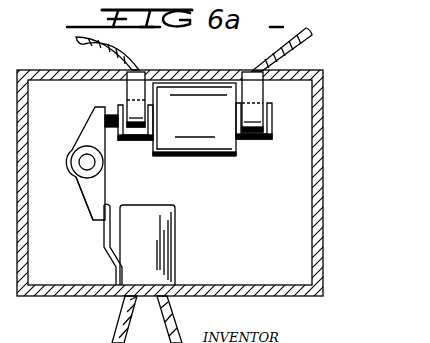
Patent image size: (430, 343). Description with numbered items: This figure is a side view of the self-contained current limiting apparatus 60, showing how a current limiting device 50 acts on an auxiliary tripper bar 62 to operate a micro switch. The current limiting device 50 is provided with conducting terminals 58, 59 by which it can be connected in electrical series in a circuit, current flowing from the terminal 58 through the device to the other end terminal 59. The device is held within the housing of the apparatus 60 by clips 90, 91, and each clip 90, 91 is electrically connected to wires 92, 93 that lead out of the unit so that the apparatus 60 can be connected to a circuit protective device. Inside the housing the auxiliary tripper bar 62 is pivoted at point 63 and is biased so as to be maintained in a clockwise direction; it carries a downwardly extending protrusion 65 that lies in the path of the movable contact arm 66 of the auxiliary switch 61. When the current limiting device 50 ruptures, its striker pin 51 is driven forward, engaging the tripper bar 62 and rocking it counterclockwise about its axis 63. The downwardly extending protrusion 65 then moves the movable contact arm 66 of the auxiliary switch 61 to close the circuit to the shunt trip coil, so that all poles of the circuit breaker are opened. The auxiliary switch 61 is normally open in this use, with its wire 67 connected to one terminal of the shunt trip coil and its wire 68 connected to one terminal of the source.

The current limiting device 50 is at (192, 82).
The striker pin 51 is at (108, 114).
The conducting terminal 58 is at (243, 140).
The conducting terminal 59 is at (125, 140).
The current limiting apparatus 60 is at (52, 300).
The auxiliary switch 61 is at (183, 255).
The auxiliary tripper bar 62 is at (67, 186).
The pivot point 63 is at (86, 164).
The downwardly extending protrusion 65 is at (97, 194).
The movable contact arm 66 is at (103, 250).
The wire 67 is at (115, 318).
The wire 68 is at (176, 318).
The clip 90 is at (141, 92).
The clip 91 is at (265, 93).
The wire 92 is at (100, 57).
The wire 93 is at (263, 56).